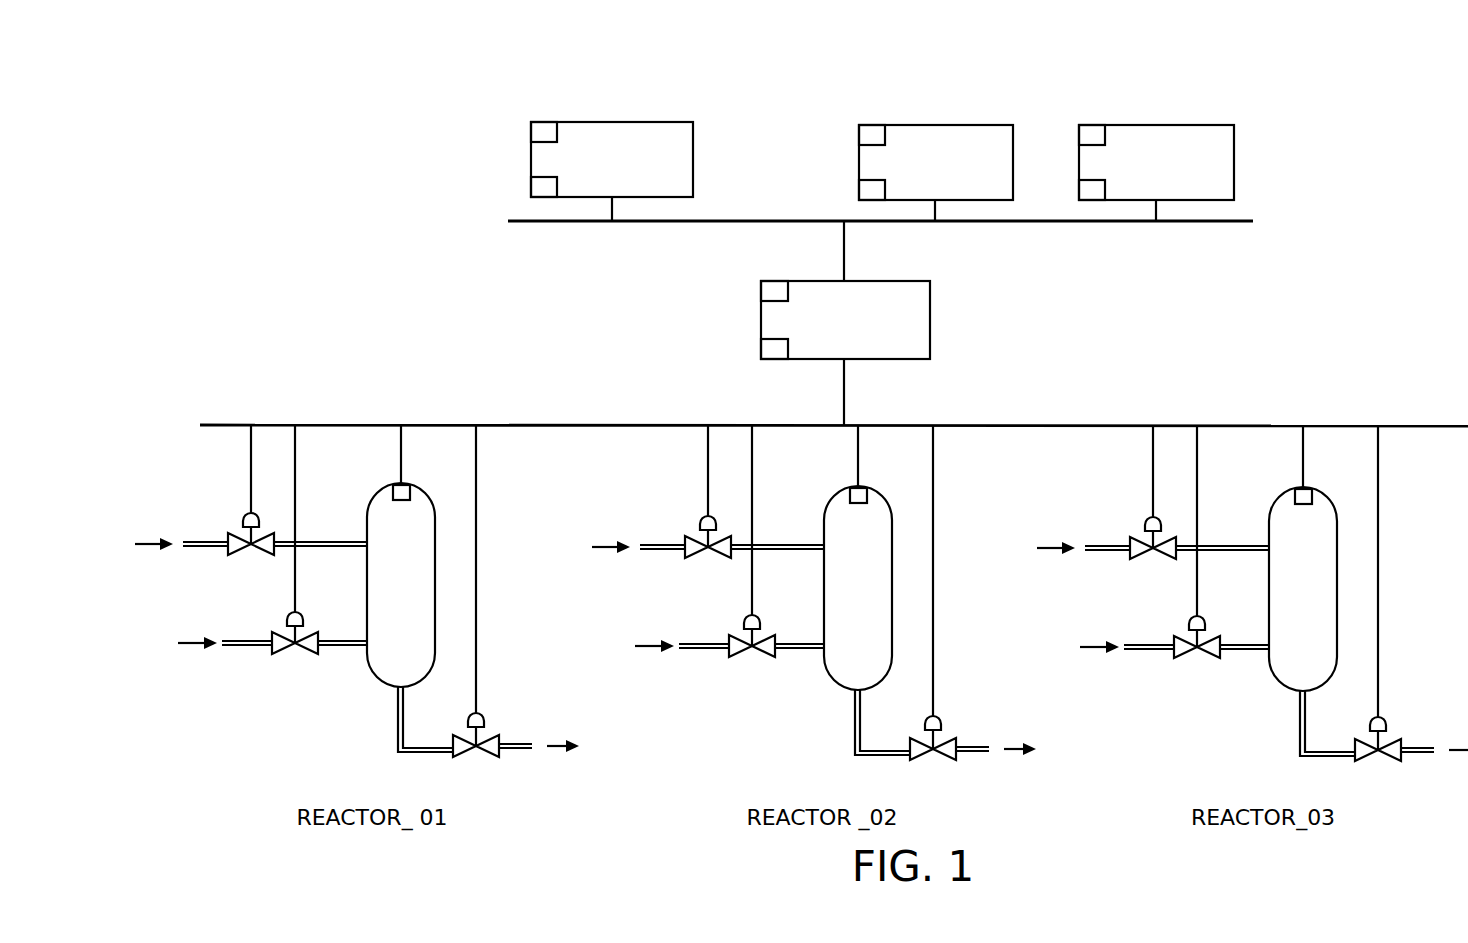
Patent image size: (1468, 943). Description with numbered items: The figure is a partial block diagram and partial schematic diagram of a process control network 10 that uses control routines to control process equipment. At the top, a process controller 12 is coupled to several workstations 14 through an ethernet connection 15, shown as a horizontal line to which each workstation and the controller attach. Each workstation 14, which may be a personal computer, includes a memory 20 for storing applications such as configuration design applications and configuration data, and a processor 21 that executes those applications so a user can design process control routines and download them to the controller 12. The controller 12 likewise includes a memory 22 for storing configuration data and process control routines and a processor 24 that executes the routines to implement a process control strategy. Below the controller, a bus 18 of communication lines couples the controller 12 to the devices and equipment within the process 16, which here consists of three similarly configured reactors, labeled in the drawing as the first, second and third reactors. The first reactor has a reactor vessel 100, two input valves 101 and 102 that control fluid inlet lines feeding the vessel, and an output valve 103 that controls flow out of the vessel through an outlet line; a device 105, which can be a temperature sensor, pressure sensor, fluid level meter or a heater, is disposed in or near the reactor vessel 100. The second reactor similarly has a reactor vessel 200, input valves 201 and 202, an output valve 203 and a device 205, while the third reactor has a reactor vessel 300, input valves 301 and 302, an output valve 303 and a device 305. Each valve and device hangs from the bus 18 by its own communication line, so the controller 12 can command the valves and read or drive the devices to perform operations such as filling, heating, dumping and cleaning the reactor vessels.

The process control network 10 is at (252, 120).
The process controller 12 is at (930, 318).
The workstations 14 is at (693, 157).
The ethernet connection 15 is at (1032, 222).
The process 16 is at (234, 356).
The bus 18 is at (844, 396).
The memory 20 is at (531, 189).
The processor 21 is at (531, 131).
The memory 22 is at (761, 349).
The processor 24 is at (770, 280).
The reactor vessel 100 is at (384, 589).
The input valve 101 is at (233, 554).
The input valve 102 is at (277, 653).
The output valve 103 is at (458, 756).
The device 105 is at (392, 487).
The reactor vessel 200 is at (858, 588).
The input valve 201 is at (708, 509).
The input valve 202 is at (729, 558).
The output valve 203 is at (945, 609).
The device 205 is at (839, 464).
The reactor vessel 300 is at (1303, 589).
The input valve 301 is at (1153, 509).
The input valve 302 is at (1174, 559).
The output valve 303 is at (1384, 610).
The device 305 is at (1274, 464).